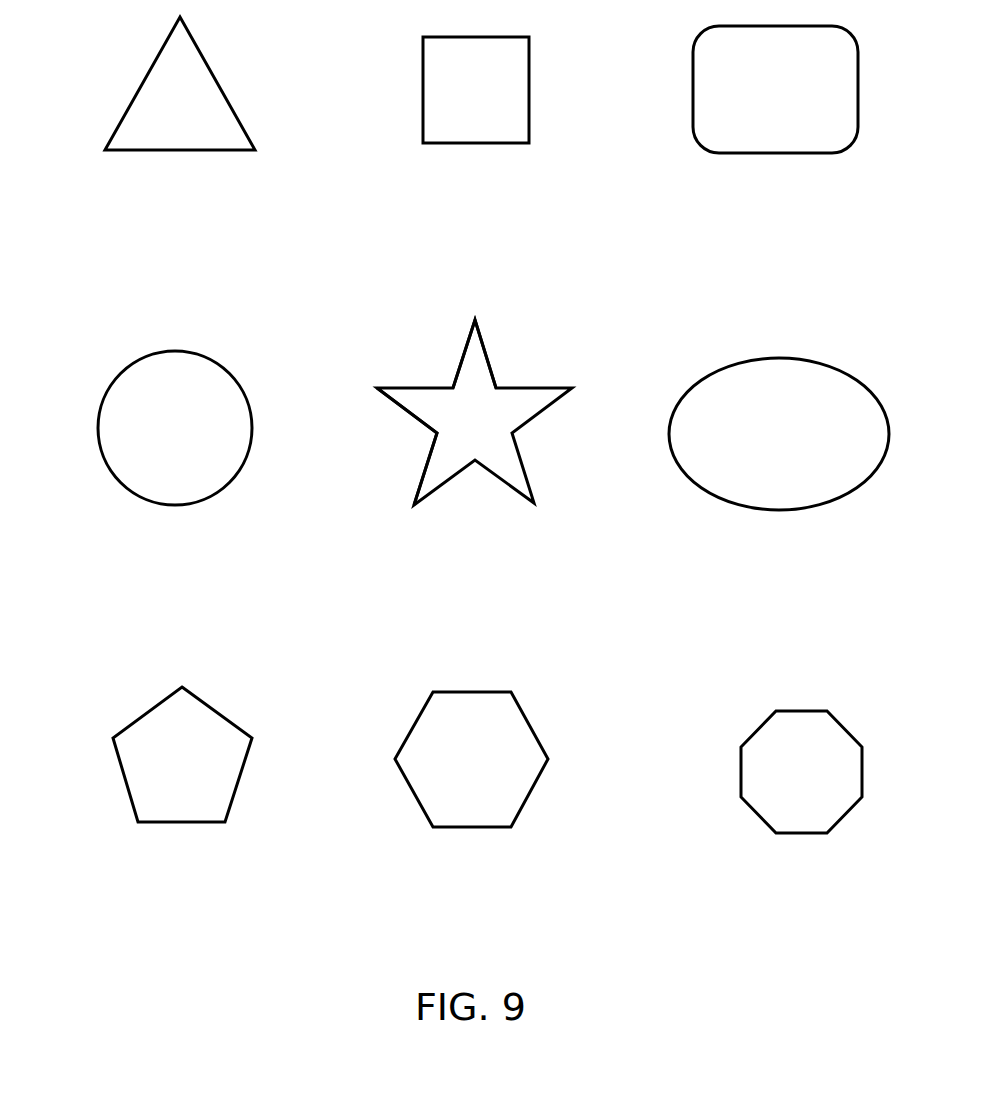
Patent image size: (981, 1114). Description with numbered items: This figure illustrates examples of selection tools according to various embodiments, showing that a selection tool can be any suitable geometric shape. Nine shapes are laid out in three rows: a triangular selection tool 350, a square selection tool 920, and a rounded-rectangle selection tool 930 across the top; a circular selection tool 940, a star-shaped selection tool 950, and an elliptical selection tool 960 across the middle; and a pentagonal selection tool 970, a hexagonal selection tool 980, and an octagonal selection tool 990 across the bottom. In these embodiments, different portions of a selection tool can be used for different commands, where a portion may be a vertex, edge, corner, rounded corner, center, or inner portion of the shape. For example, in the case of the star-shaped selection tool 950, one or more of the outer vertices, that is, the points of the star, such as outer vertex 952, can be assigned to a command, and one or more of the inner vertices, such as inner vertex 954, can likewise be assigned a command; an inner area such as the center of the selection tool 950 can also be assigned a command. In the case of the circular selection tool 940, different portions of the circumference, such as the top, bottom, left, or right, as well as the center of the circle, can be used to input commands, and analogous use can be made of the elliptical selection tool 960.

The selection tool 350 is at (154, 107).
The selection tool 920 is at (453, 103).
The selection tool 930 is at (727, 117).
The selection tool 940 is at (136, 401).
The selection tool 950 is at (437, 410).
The outer vertex 952 is at (475, 315).
The inner vertex 954 is at (433, 440).
The selection tool 960 is at (736, 387).
The selection tool 970 is at (205, 733).
The selection tool 980 is at (513, 742).
The selection tool 990 is at (803, 743).